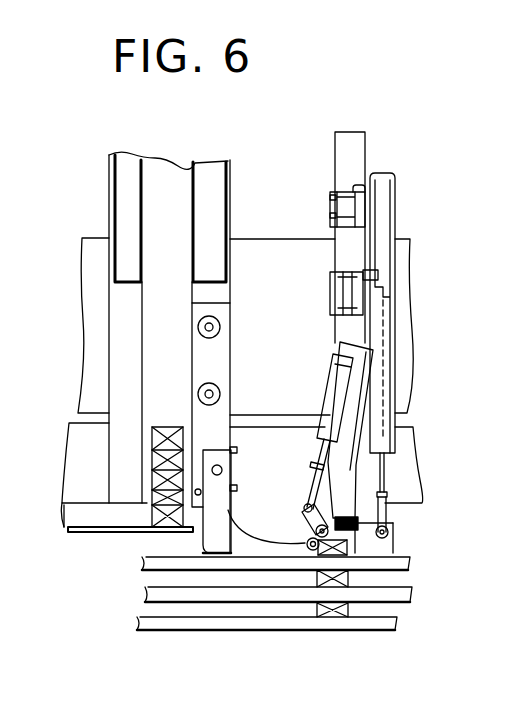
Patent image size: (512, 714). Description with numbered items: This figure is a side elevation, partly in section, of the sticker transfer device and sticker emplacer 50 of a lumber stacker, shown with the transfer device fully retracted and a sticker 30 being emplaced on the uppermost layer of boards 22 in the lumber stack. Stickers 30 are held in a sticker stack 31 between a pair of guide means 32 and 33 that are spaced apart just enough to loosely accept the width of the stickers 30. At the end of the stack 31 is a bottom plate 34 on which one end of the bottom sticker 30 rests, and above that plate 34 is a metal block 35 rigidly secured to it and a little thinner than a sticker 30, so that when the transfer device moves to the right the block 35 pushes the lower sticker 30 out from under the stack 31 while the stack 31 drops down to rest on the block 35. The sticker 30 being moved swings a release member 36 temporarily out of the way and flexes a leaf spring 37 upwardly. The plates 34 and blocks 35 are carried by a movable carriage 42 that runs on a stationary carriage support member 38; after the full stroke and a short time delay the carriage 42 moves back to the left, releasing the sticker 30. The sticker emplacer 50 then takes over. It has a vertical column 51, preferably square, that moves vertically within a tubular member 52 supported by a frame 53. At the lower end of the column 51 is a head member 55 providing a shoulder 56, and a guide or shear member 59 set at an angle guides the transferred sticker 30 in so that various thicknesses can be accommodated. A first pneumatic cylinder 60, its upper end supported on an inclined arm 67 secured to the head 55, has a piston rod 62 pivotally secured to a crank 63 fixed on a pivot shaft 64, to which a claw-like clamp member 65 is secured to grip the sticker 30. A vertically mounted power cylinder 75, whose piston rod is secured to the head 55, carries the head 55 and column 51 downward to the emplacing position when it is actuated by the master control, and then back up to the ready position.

The boards 22 is at (394, 621).
The stickers 30 is at (177, 473).
The sticker stack 31 is at (177, 158).
The guide means 32 is at (114, 170).
The guide means 33 is at (222, 176).
The bottom plate 34 is at (112, 530).
The metal block 35 is at (76, 520).
The release member 36 is at (230, 460).
The leaf spring 37 is at (259, 534).
The carriage support member 38 is at (286, 279).
The movable carriage 42 is at (100, 469).
The sticker emplacer 50 is at (371, 149).
The vertical column 51 is at (355, 468).
The tubular member 52 is at (333, 322).
The frame 53 is at (330, 197).
The head member 55 is at (393, 550).
The shoulder 56 is at (362, 548).
The guide or shear member 59 is at (306, 500).
The first pneumatic cylinder 60 is at (333, 386).
The piston rod 62 is at (318, 445).
The crank 63 is at (326, 524).
The pivot shaft 64 is at (362, 523).
The clamp member 65 is at (307, 528).
The inclined arm 67 is at (357, 403).
The power cylinder 75 is at (383, 333).